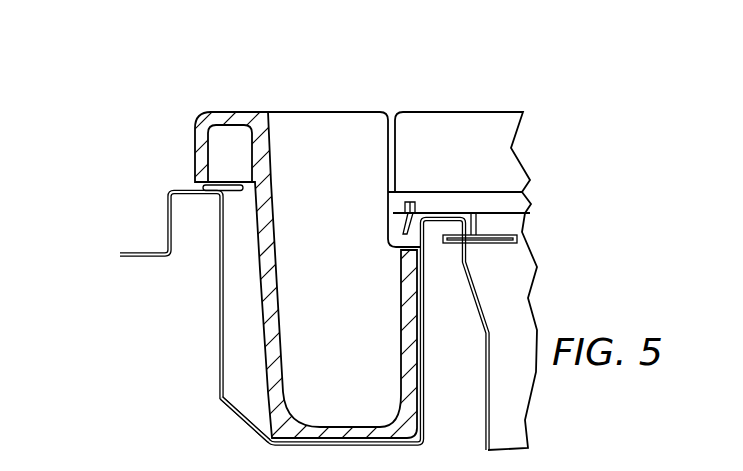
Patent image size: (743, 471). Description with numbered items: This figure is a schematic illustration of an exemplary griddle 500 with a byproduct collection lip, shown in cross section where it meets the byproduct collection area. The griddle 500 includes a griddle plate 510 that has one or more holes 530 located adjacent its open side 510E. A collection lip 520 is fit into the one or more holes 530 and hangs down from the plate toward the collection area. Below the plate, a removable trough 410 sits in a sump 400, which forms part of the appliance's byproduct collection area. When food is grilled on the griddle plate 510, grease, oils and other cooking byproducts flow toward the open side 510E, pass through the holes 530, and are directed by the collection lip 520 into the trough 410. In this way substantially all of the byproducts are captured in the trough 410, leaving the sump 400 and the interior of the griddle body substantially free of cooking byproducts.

The sump 400 is at (238, 287).
The trough 410 is at (288, 425).
The griddle 500 is at (524, 133).
The griddle plate 510 is at (507, 205).
The open side 510E is at (382, 198).
The collection lip 520 is at (402, 226).
The holes 530 is at (415, 206).